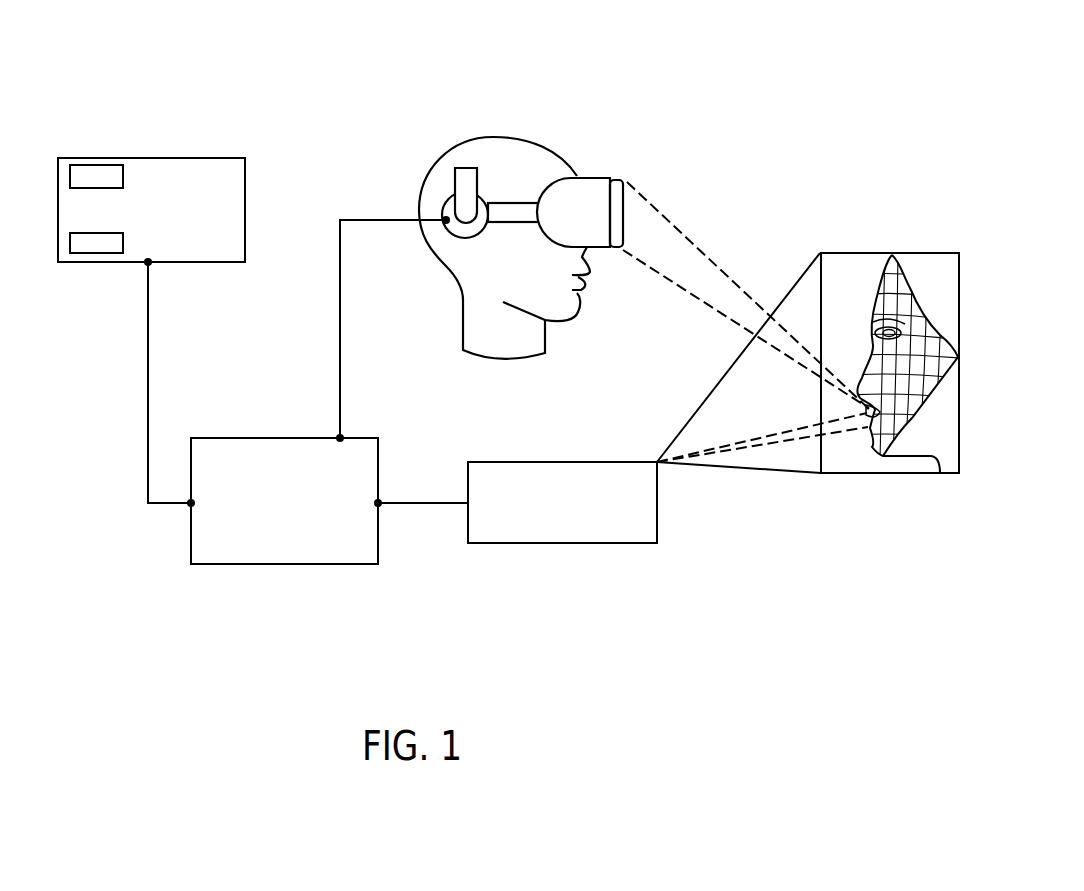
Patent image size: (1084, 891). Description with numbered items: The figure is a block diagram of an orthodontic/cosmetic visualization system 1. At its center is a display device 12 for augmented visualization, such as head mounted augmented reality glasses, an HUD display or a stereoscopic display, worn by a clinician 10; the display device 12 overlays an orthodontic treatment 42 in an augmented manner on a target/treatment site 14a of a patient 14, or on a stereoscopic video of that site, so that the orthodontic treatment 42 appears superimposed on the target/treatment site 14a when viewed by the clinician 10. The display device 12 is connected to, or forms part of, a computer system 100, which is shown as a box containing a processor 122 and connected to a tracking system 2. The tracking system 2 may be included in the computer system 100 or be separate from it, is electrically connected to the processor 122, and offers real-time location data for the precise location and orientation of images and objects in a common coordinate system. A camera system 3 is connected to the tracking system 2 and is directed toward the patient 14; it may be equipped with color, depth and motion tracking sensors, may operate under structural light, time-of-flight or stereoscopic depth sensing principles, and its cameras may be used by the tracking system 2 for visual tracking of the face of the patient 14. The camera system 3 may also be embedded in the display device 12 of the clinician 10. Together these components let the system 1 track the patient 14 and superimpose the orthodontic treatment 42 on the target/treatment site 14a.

The visualization system 1 is at (840, 77).
The computer system 100 is at (147, 158).
The processor 122 is at (83, 165).
The tracking system 2 is at (88, 253).
The camera system 3 is at (570, 462).
The clinician 10 is at (418, 177).
The display device 12 is at (600, 178).
The patient 14 is at (931, 275).
The target/treatment site 14a is at (842, 405).
The orthodontic treatment 42 is at (872, 427).